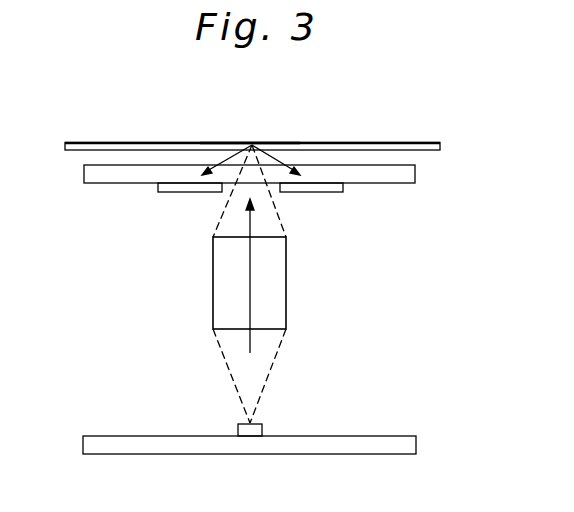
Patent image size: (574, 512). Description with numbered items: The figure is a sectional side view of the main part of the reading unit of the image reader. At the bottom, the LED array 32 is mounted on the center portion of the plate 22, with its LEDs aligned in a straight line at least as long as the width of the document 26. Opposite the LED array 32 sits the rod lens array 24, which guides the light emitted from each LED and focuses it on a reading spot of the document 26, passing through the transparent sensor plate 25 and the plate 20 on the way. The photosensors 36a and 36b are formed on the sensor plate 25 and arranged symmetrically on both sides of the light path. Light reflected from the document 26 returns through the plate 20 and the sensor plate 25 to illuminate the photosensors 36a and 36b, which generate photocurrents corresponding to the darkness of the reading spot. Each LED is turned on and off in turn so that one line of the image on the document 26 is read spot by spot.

The plate 20 is at (441, 147).
The document 26 is at (342, 141).
The transparent sensor plate 25 is at (413, 168).
The photosensor 36a is at (188, 193).
The photosensor 36b is at (315, 193).
The rod lens array 24 is at (277, 295).
The LED array 32 is at (262, 430).
The plate 22 is at (413, 443).